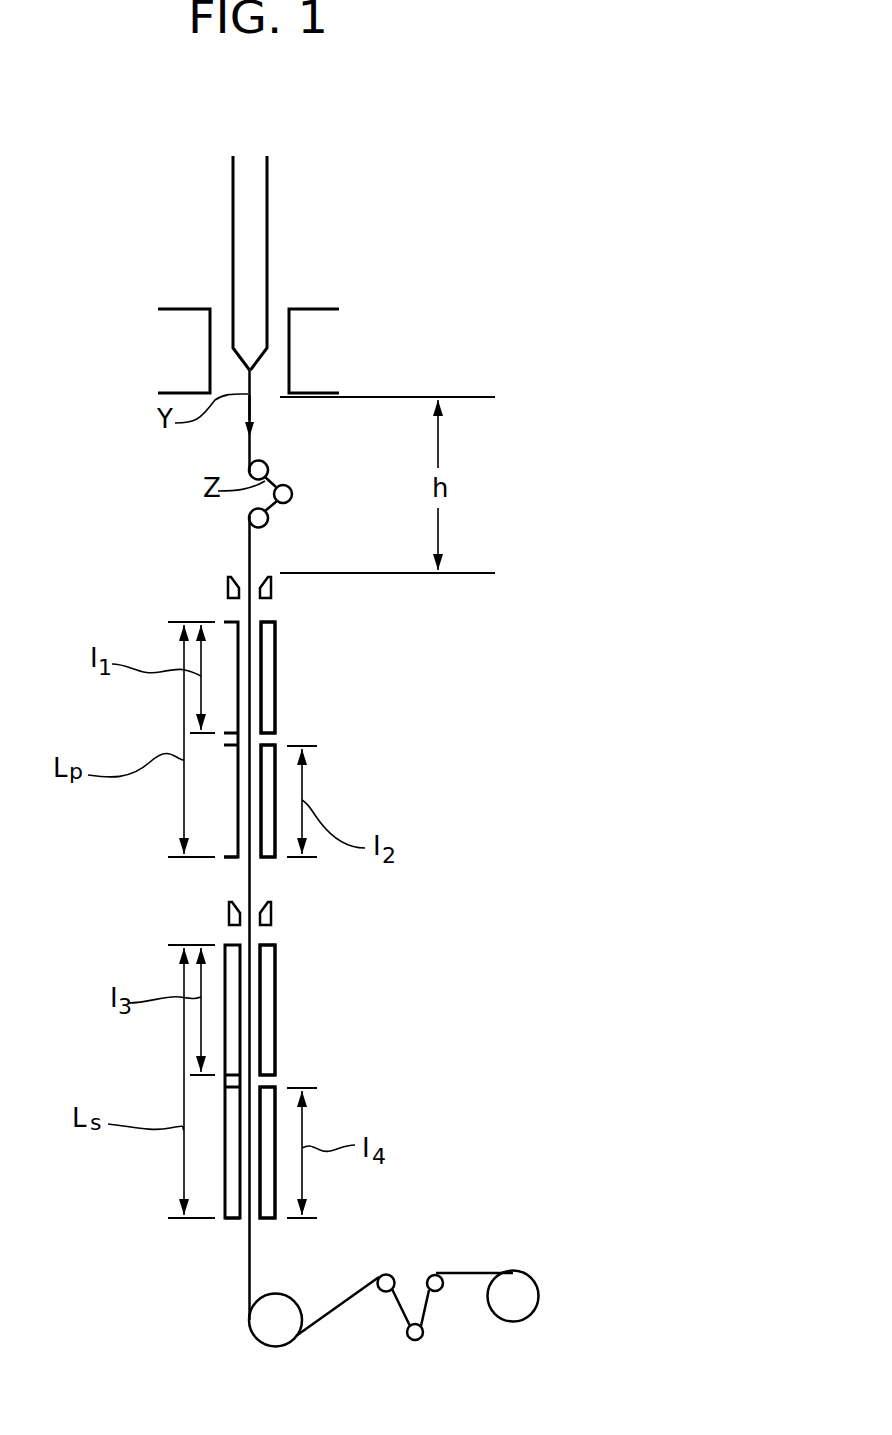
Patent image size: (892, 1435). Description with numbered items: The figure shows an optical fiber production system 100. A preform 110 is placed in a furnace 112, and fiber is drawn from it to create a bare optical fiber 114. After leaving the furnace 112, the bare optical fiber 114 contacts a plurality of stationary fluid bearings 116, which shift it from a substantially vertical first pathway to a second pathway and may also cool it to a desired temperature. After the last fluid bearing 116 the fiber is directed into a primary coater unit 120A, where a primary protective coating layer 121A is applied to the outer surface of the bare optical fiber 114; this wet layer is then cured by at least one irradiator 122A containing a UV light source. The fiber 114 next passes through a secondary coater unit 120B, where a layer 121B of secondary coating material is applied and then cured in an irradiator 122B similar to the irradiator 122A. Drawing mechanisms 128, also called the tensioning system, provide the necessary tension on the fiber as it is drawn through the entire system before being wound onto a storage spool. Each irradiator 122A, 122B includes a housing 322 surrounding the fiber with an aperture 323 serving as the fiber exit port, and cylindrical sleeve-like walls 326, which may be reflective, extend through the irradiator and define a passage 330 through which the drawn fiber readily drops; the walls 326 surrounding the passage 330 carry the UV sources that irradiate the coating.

The system for producing optical fibers 100 is at (507, 176).
The preform 110 is at (270, 240).
The furnace 112 is at (253, 351).
The bare optical fiber 114 is at (252, 410).
The stationary fluid bearing 116 is at (270, 465).
The primary coater unit 120A is at (278, 585).
The primary protective coating layer 121A is at (264, 608).
The irradiator 122A is at (283, 788).
The secondary coater unit 120B is at (279, 910).
The layer of secondary coating material 121B is at (274, 933).
The irradiator 122B is at (283, 1065).
The drawing mechanisms 128 is at (508, 1268).
The housing 322 is at (268, 712).
The aperture 323 is at (244, 620).
The cylindrical sleeve-like walls 326 is at (268, 672).
The passage 330 is at (240, 858).